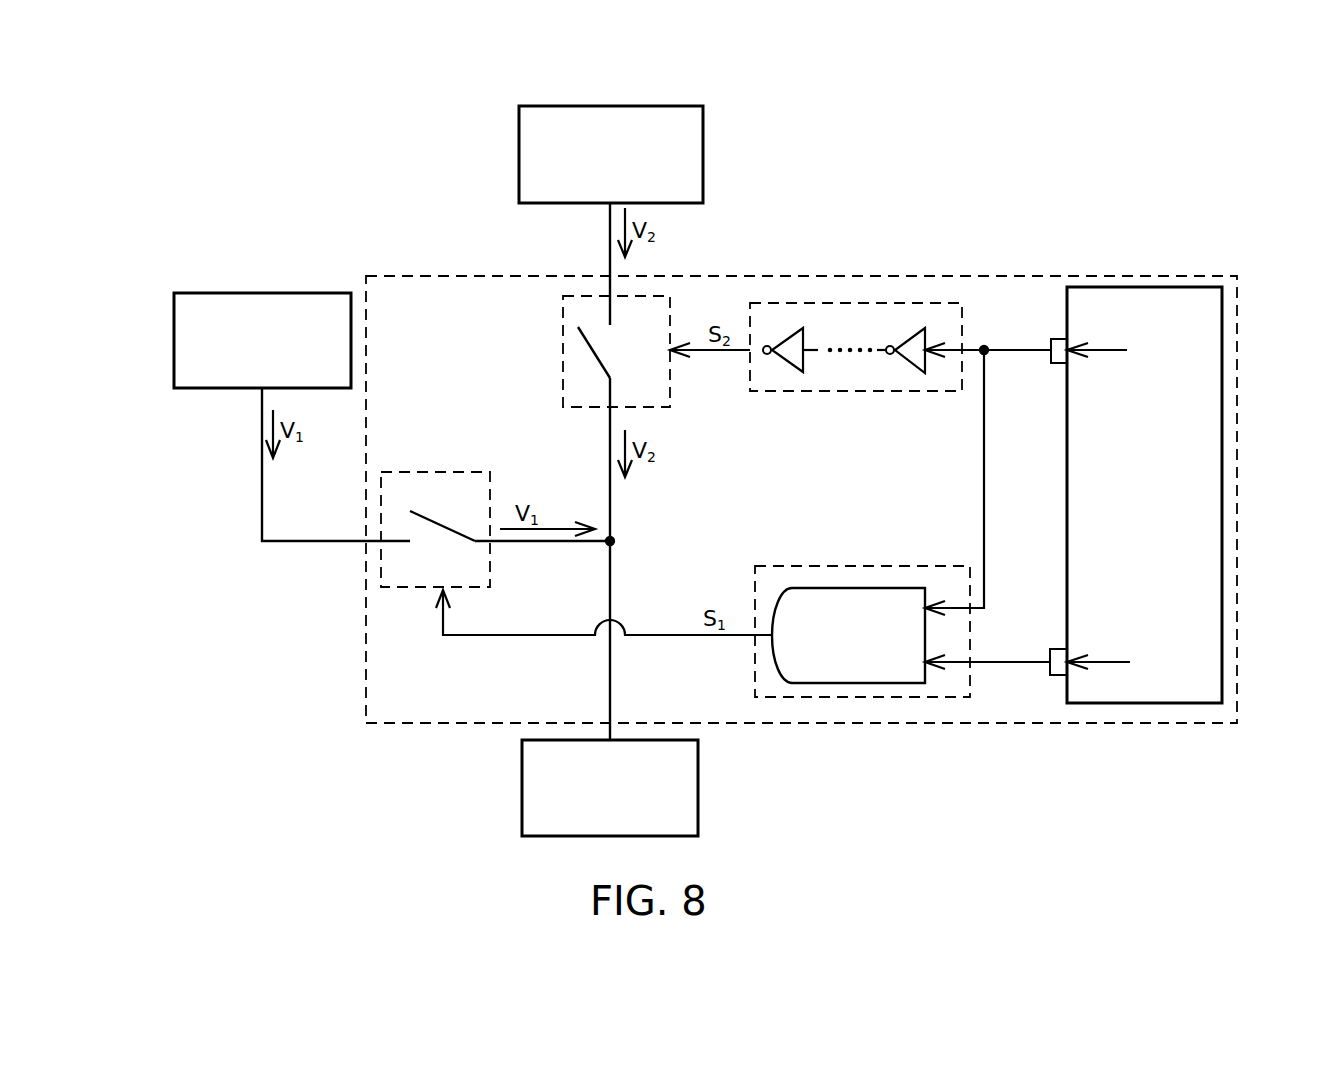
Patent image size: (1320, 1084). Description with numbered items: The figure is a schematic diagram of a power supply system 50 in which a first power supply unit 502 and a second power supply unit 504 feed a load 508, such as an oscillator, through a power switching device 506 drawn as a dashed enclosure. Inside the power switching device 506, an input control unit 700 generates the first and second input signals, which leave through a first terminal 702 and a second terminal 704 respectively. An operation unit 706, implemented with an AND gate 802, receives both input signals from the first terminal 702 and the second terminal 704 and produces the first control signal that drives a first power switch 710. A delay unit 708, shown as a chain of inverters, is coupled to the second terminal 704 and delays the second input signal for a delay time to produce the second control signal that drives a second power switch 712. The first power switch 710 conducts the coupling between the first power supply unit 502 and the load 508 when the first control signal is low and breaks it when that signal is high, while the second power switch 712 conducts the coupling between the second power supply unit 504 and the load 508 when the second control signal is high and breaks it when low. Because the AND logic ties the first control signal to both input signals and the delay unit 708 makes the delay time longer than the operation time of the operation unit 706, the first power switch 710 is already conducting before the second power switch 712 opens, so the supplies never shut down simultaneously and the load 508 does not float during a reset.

The power supply system 50 is at (1005, 160).
The first power supply unit 502 is at (262, 292).
The second power supply unit 504 is at (704, 152).
The power switching device 506 is at (468, 274).
The load 508 is at (699, 788).
The input control unit 700 is at (1141, 286).
The first terminal 702 is at (1053, 648).
The second terminal 704 is at (1053, 338).
The operation unit 706 is at (862, 589).
The delay unit 708 is at (861, 301).
The first power switch 710 is at (433, 471).
The second power switch 712 is at (561, 350).
The AND gate 802 is at (876, 587).